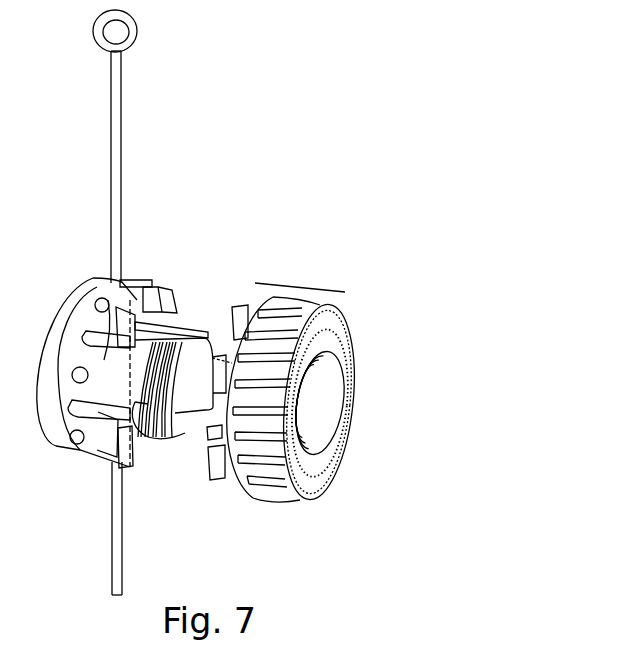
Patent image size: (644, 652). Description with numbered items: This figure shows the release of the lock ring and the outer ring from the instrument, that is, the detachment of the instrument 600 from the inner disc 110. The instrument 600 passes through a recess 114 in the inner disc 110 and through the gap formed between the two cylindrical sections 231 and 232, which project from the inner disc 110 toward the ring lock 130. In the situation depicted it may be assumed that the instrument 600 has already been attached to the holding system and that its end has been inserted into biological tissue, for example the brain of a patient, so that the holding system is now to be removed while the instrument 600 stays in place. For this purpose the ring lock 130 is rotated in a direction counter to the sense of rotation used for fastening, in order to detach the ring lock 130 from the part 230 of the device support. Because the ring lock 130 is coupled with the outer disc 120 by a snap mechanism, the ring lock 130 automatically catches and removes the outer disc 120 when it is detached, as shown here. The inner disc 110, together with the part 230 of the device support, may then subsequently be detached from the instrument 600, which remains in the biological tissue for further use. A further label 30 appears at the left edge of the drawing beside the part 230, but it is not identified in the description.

The instrument 600 is at (127, 98).
The part of the device support 230 is at (70, 292).
The flange 30 is at (14, 301).
The recess 114 is at (127, 279).
The inner disc 110 is at (137, 283).
The cylindrical section 231 is at (178, 322).
The cylindrical section 232 is at (133, 405).
The outer disc 120 is at (255, 320).
The ring lock 130 is at (335, 322).